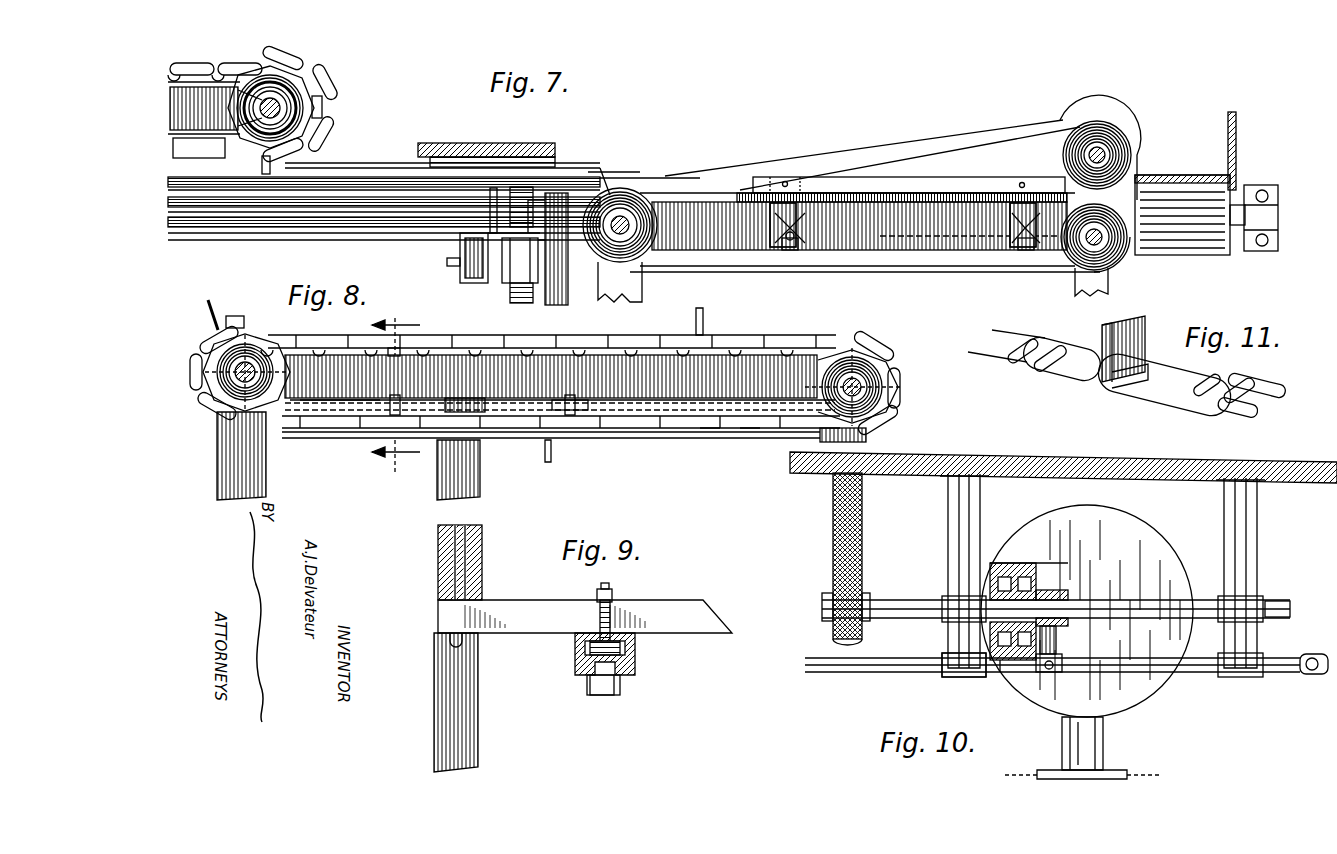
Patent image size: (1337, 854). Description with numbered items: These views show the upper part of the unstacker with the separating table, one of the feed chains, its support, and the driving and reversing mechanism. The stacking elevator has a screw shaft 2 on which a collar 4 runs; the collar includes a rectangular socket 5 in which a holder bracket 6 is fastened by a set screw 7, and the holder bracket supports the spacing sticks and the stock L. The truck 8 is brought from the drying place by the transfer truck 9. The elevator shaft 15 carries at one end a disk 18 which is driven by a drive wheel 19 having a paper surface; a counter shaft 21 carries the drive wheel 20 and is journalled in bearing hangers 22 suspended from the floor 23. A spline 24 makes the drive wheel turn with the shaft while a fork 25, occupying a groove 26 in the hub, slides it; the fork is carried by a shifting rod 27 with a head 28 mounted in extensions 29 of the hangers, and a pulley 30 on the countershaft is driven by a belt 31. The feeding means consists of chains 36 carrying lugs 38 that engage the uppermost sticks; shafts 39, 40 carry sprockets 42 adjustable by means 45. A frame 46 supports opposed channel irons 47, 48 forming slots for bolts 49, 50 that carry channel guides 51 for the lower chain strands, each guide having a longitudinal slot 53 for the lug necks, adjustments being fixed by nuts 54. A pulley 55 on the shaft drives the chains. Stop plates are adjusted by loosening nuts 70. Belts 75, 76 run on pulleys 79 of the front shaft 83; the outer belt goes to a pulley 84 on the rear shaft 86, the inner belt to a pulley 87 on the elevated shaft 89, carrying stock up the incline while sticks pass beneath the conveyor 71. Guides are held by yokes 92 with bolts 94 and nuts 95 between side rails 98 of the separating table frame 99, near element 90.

In FIG. 7, the screw shaft 2 is at (508, 296).
In FIG. 7, the collar 4 is at (518, 262).
In FIG. 7, the rectangular socket 5 is at (462, 272).
In FIG. 7, the holder bracket 6 is at (492, 280).
In FIG. 7, the set screw 7 is at (447, 262).
In FIG. 7, the truck 8 is at (380, 150).
In FIG. 8, the transfer truck 9 is at (396, 390).
In FIG. 7, the stock L is at (325, 165).
In FIG. 10, the elevator shaft 15 is at (1065, 632).
In FIG. 10, the disk 18 is at (1100, 510).
In FIG. 10, the drive wheel 19 is at (1000, 658).
In FIG. 10, the drive wheel 20 is at (1005, 563).
In FIG. 10, the counter shaft 21 is at (882, 600).
In FIG. 10, the bearing hanger 22 is at (950, 555).
In FIG. 10, the floor 23 is at (1040, 448).
In FIG. 10, the spline 24 is at (1190, 600).
In FIG. 10, the fork 25 is at (1050, 650).
In FIG. 10, the groove 26 is at (1055, 590).
In FIG. 10, the shifting rod 27 is at (860, 672).
In FIG. 10, the head 28 is at (1318, 676).
In FIG. 10, the extension 29 is at (945, 677).
In FIG. 10, the pulley 30 is at (822, 604).
In FIG. 10, the belt 31 is at (835, 520).
In FIG. 7, the chain 36 is at (200, 63).
In FIG. 8, the chain 36 is at (627, 325).
In FIG. 11, the chain 36 is at (1082, 333).
In FIG. 9, the chain 36 is at (635, 661).
In FIG. 7, the lug 38 is at (253, 167).
In FIG. 8, the lug 38 is at (712, 312).
In FIG. 11, the lug 38 is at (1140, 338).
In FIG. 9, the lug 38 is at (598, 695).
In FIG. 8, the shaft 39 is at (258, 372).
In FIG. 7, the shaft 40 is at (300, 82).
In FIG. 8, the shaft 40 is at (830, 386).
In FIG. 7, the sprocket 42 is at (288, 62).
In FIG. 8, the sprocket 42 is at (900, 398).
In FIG. 8, the adjusting means 45 is at (245, 305).
In FIG. 8, the frame 46 is at (740, 362).
In FIG. 9, the frame 46 is at (490, 568).
In FIG. 8, the channel iron 47 is at (368, 378).
In FIG. 9, the channel iron 47 is at (562, 592).
In FIG. 8, the channel iron 48 is at (562, 383).
In FIG. 8, the bolt 49 is at (400, 398).
In FIG. 9, the bolt 49 is at (610, 620).
In FIG. 8, the bolt 50 is at (575, 402).
In FIG. 7, the channel guide 51 is at (199, 149).
In FIG. 8, the channel guide 51 is at (460, 400).
In FIG. 9, the channel guide 51 is at (635, 645).
In FIG. 8, the longitudinal slot 53 is at (668, 440).
In FIG. 9, the longitudinal slot 53 is at (620, 680).
In FIG. 8, the nut 54 is at (386, 362).
In FIG. 9, the nut 54 is at (612, 594).
In FIG. 7, the pulley 55 is at (282, 106).
In FIG. 7, the nut 70 is at (568, 250).
In FIG. 7, the conveyor 71 is at (1175, 175).
In FIG. 7, the belt 75 is at (815, 192).
In FIG. 7, the belt 76 is at (870, 158).
In FIG. 7, the pulley 79 is at (606, 168).
In FIG. 7, the front shaft 83 is at (628, 222).
In FIG. 7, the pulley 84 is at (1097, 250).
In FIG. 7, the rear shaft 86 is at (1102, 240).
In FIG. 7, the pulley 87 is at (1128, 140).
In FIG. 7, the shaft 89 is at (1090, 155).
In FIG. 7, the conveyor body 90 is at (855, 205).
In FIG. 7, the yoke 92 is at (783, 212).
In FIG. 7, the bolt 94 is at (800, 228).
In FIG. 7, the nut 95 is at (790, 250).
In FIG. 7, the side rail 98 is at (970, 241).
In FIG. 7, the separating table frame 99 is at (634, 290).